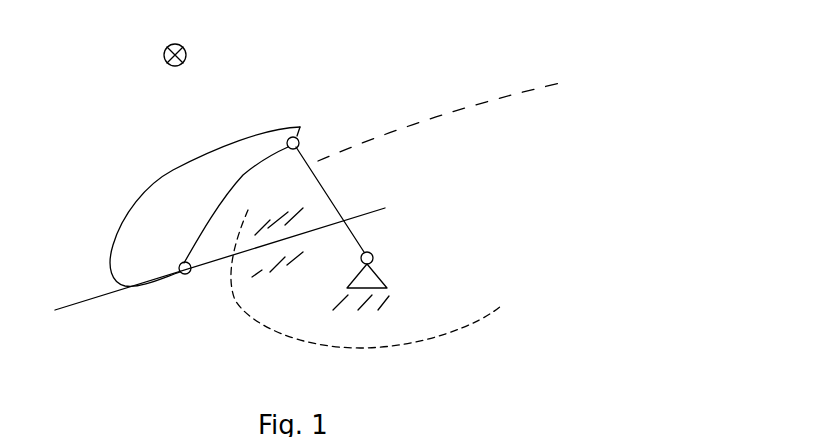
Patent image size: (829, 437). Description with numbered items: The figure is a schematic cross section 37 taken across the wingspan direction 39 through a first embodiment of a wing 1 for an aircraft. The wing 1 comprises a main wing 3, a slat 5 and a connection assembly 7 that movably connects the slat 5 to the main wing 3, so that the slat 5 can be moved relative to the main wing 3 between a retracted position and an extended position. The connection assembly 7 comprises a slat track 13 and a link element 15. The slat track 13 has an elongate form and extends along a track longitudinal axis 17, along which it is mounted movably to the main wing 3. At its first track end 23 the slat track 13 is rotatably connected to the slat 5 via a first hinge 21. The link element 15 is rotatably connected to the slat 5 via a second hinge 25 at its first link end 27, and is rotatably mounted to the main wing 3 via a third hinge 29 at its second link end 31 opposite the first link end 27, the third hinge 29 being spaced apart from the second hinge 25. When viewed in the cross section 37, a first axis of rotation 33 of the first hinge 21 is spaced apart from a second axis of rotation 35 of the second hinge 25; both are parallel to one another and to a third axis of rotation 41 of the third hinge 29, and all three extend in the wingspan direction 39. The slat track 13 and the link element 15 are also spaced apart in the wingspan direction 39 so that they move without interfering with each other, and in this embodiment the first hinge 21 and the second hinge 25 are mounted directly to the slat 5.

The wing 1 is at (296, 66).
The main wing 3 is at (394, 190).
The slat 5 is at (161, 245).
The connection assembly 7 is at (240, 330).
The slat track 13 is at (199, 270).
The link element 15 is at (394, 190).
The track longitudinal axis 17 is at (87, 302).
The first hinge 21 is at (249, 226).
The first track end 23 is at (159, 339).
The second hinge 25 is at (345, 116).
The first link end 27 is at (299, 145).
The third hinge 29 is at (413, 277).
The second link end 31 is at (358, 236).
The first axis of rotation 33 is at (277, 242).
The second axis of rotation 35 is at (345, 93).
The cross section 37 is at (188, 195).
The wingspan direction 39 is at (167, 47).
The third axis of rotation 41 is at (373, 255).